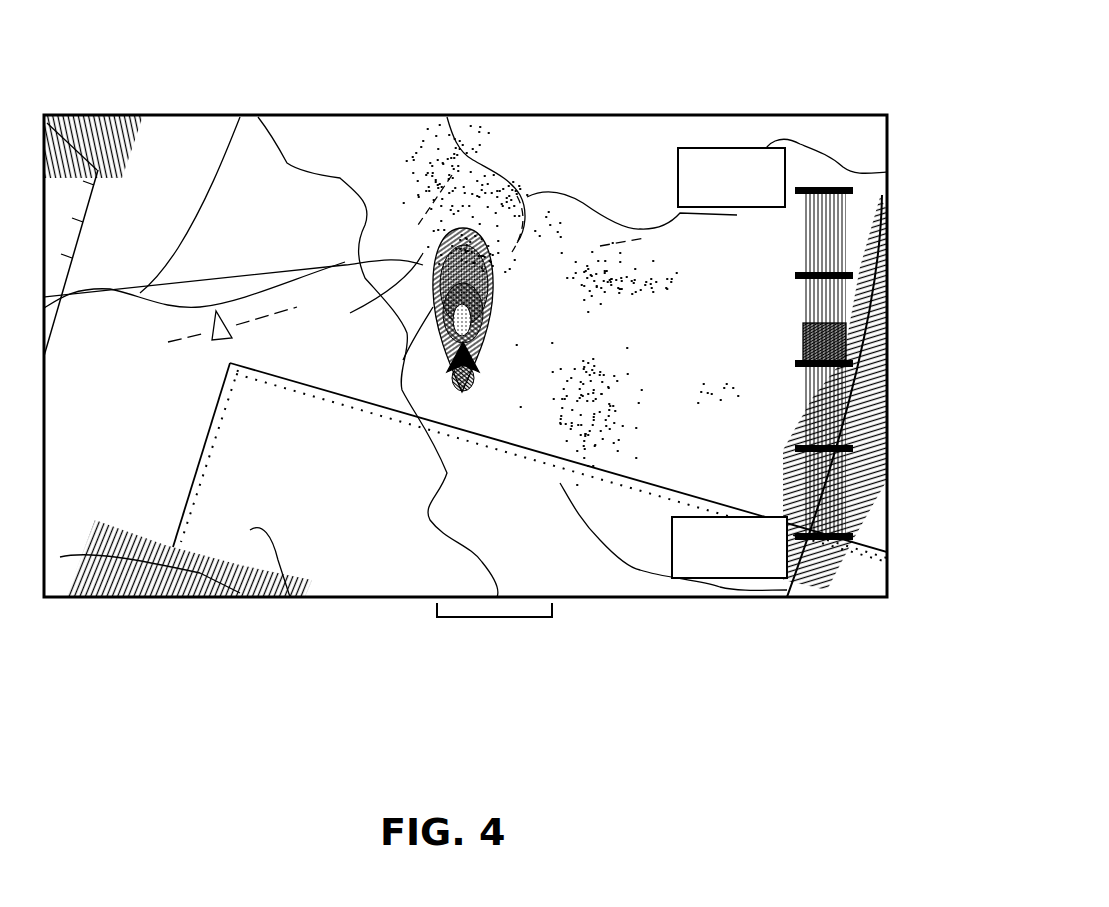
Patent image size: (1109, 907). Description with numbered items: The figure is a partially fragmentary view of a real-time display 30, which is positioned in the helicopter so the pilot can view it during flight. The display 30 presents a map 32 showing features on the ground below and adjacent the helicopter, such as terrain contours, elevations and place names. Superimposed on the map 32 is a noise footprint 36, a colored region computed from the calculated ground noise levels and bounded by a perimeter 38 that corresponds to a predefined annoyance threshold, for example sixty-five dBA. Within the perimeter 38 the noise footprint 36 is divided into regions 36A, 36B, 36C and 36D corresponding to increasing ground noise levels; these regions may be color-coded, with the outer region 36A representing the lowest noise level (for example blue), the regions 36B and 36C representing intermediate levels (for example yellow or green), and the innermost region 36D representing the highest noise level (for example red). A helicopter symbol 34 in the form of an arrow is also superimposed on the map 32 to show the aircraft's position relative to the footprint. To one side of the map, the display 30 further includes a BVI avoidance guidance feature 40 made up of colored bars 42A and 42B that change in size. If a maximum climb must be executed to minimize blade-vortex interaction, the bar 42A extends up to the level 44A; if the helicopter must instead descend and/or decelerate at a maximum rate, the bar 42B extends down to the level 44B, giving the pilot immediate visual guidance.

The real-time display 30 is at (462, 104).
The map 32 is at (620, 138).
The helicopter symbol 34 is at (485, 393).
The noise footprint 36 is at (453, 299).
The outer region 36A is at (480, 258).
The intermediate noise region 36B is at (478, 283).
The intermediate noise region 36C is at (476, 306).
The highest noise region 36D is at (484, 348).
The perimeter 38 is at (400, 292).
The BVI avoidance guidance feature 40 is at (868, 398).
The climb bar 42A is at (872, 335).
The descend bar 42B is at (872, 385).
The maximum climb level 44A is at (853, 197).
The maximum descend level 44B is at (850, 525).